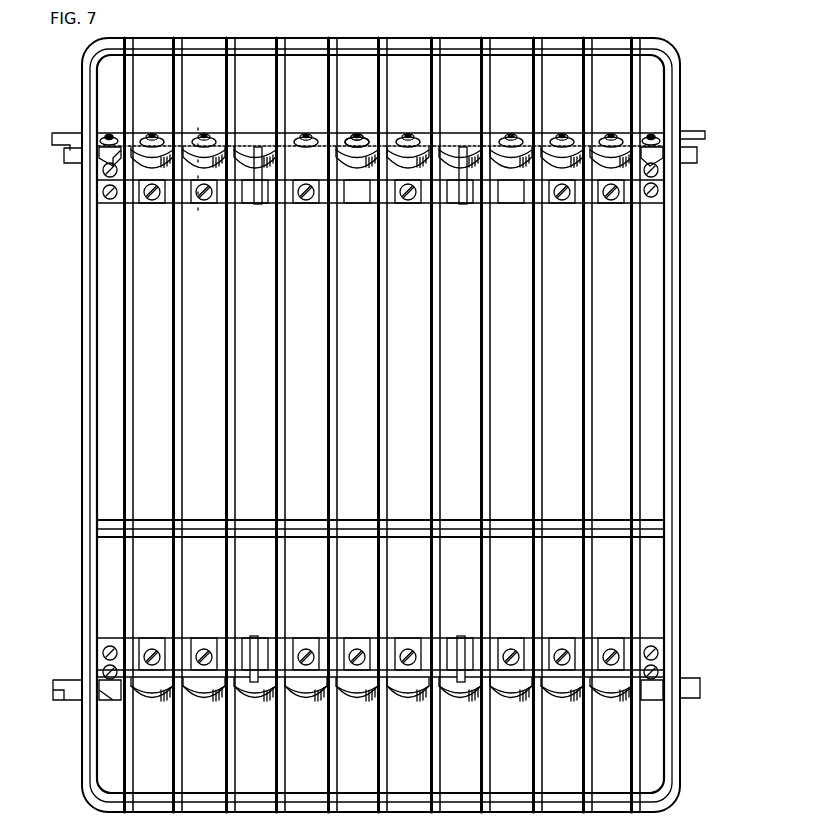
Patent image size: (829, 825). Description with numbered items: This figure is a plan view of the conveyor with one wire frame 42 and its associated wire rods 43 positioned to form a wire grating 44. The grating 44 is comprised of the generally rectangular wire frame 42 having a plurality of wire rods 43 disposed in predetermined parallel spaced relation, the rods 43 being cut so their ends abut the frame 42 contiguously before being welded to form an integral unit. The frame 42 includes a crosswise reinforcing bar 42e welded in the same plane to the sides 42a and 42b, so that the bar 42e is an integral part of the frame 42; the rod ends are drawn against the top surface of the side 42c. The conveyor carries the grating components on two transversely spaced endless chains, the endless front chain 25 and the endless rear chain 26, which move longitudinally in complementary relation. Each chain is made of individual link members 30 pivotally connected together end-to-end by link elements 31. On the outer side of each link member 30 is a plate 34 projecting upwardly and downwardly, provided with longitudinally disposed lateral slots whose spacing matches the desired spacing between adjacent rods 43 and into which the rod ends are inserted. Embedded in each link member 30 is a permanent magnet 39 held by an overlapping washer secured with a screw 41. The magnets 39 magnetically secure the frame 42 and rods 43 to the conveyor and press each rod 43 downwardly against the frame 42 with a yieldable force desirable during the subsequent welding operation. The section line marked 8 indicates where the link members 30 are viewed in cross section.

The section line 8- 8 is at (185, 122).
The endless front chain 25 is at (307, 703).
The endless rear chain 26 is at (306, 133).
The link member 30 is at (373, 137).
The link element 31 is at (72, 134).
The plate 34 is at (240, 148).
The permanent magnet 39 is at (343, 205).
The screw 41 is at (307, 204).
The wire frame 42 is at (397, 415).
The side of wire frame 42a is at (673, 462).
The side of wire frame 42b is at (92, 440).
The side of wire frame 42c is at (466, 42).
The bar 42e is at (305, 518).
The wire rod 43 is at (134, 430).
The grating 44 is at (497, 808).